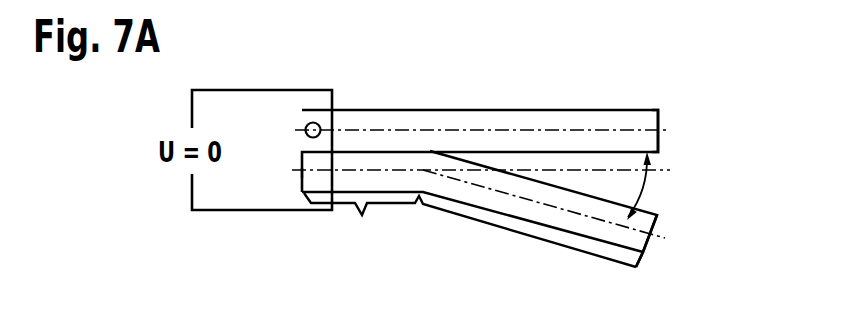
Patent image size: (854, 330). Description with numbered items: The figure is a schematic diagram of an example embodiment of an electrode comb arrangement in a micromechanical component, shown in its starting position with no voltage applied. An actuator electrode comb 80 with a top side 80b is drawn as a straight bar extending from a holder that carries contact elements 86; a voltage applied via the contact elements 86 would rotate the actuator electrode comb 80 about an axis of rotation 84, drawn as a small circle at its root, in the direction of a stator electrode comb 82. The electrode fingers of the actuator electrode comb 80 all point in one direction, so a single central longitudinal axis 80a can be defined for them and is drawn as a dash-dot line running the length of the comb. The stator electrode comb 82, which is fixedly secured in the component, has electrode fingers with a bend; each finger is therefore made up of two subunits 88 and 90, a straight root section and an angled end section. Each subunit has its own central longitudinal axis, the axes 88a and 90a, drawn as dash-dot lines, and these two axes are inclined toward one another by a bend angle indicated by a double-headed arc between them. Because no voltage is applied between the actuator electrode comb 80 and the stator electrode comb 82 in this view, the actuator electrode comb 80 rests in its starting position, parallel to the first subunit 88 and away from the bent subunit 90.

The actuator electrode comb 80 is at (423, 110).
The central longitudinal axis 80a is at (493, 129).
The top side 80b is at (623, 108).
The stator electrode comb 82 is at (628, 244).
The axis of rotation 84 is at (318, 122).
The contact elements 86 is at (283, 90).
The subunit 88 is at (470, 230).
The central longitudinal axis 88a is at (335, 173).
The subunit 90 is at (537, 237).
The central longitudinal axis 90a is at (587, 218).